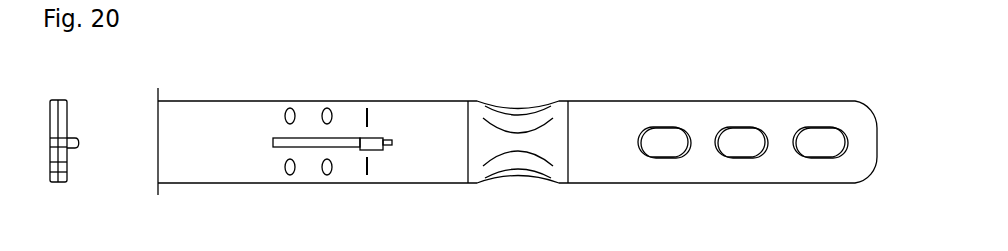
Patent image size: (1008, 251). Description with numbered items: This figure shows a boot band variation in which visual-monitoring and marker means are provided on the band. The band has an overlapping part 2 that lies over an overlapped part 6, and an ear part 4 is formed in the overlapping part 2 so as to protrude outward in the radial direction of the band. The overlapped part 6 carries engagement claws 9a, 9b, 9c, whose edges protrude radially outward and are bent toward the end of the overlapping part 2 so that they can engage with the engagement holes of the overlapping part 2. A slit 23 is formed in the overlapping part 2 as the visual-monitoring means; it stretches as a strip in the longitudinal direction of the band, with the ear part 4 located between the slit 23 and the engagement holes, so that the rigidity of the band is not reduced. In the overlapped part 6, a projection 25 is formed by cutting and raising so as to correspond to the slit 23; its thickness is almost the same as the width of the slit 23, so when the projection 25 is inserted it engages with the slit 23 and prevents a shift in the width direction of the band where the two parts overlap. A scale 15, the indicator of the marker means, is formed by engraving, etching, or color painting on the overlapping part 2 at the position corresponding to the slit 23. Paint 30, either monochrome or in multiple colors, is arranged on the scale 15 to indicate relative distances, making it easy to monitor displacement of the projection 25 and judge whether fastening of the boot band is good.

The overlapping part 2 is at (65, 108).
The ear part 4 is at (535, 100).
The overlapped part 6 is at (57, 173).
The engagement claw 9a is at (657, 138).
The engagement claw 9b is at (725, 138).
The engagement claw 9c is at (807, 140).
The scale 15 is at (363, 167).
The slit 23 is at (308, 140).
The projection 25 is at (72, 140).
The paint 30 is at (290, 104).